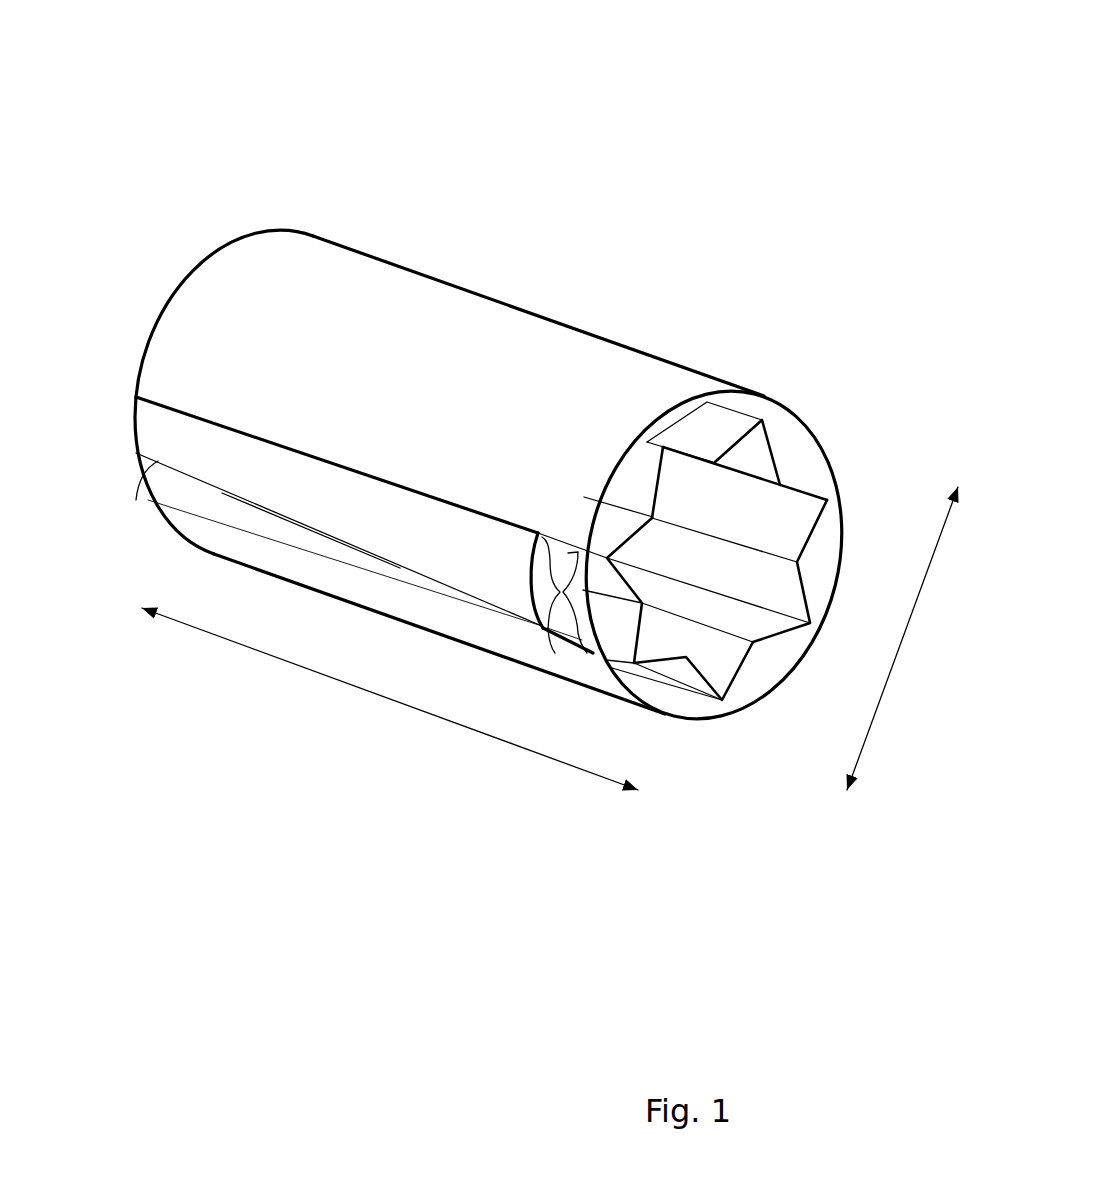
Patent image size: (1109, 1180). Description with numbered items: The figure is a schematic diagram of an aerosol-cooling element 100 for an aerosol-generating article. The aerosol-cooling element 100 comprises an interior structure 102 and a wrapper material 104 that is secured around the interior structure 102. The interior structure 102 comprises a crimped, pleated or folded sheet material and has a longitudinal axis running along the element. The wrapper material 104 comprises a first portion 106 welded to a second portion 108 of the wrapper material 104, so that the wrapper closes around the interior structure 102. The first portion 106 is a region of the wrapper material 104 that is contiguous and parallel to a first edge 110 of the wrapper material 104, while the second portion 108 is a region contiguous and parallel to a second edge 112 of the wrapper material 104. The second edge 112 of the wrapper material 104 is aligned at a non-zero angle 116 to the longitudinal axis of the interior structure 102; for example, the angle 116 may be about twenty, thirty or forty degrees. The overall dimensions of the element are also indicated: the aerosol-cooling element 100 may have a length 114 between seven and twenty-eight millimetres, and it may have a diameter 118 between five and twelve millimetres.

The aerosol-cooling element 100 is at (765, 115).
The interior structure 102 is at (778, 513).
The wrapper material 104 is at (440, 313).
The first portion 106 is at (568, 553).
The second portion 108 is at (548, 626).
The first edge 110 is at (297, 448).
The second edge 112 is at (140, 475).
The length 114 is at (277, 658).
The angle 116 is at (222, 492).
The diameter 118 is at (895, 665).